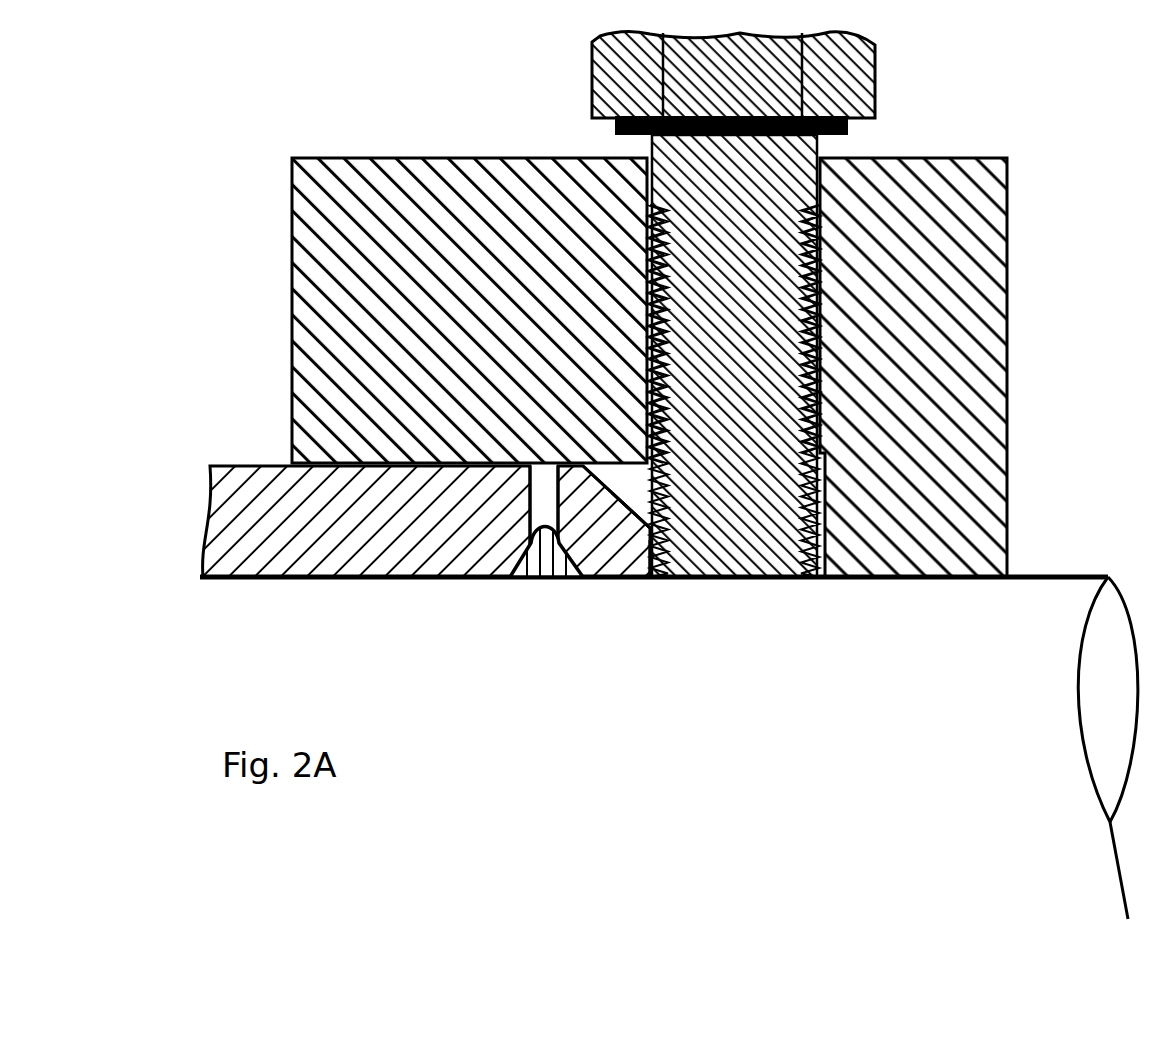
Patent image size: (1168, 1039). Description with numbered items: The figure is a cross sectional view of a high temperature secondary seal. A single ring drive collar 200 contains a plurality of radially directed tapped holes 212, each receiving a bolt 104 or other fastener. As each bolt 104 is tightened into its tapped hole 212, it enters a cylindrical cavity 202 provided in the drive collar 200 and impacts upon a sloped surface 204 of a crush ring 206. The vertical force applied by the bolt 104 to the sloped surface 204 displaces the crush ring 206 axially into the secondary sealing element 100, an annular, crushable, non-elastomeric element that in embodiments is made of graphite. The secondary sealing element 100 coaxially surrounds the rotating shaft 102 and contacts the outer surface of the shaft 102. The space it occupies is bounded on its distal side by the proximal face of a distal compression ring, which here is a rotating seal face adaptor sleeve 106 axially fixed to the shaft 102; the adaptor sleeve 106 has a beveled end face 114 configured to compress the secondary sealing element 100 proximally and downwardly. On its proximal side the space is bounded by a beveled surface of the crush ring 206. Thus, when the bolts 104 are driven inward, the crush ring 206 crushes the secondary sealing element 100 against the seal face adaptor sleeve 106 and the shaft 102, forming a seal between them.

The secondary sealing element 100 is at (546, 560).
The shaft 102 is at (906, 669).
The bolt 104 is at (756, 301).
The seal face adaptor sleeve 106 is at (385, 534).
The beveled end face 114 is at (520, 550).
The drive collar 200 is at (481, 301).
The cylindrical cavity 202 is at (636, 483).
The sloped surface 204 is at (632, 507).
The crush ring 206 is at (646, 580).
The tapped hole 212 is at (818, 222).